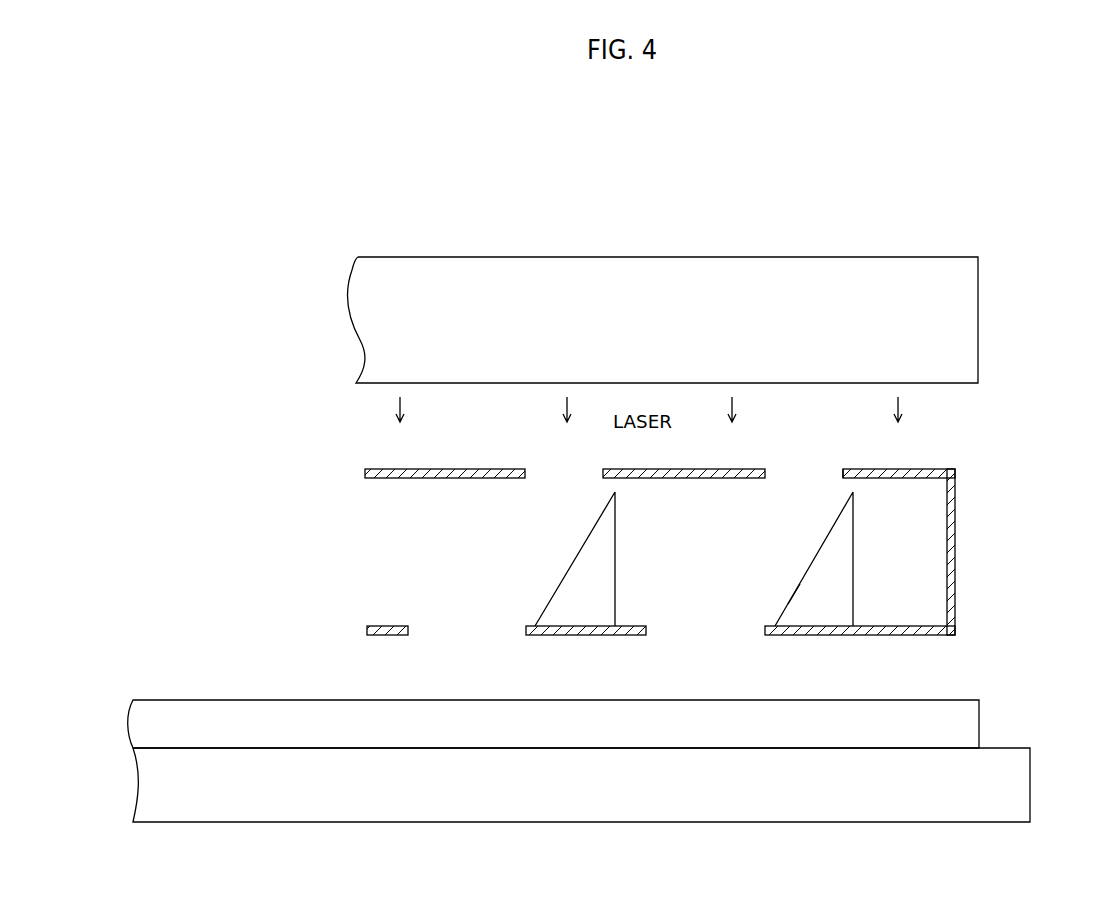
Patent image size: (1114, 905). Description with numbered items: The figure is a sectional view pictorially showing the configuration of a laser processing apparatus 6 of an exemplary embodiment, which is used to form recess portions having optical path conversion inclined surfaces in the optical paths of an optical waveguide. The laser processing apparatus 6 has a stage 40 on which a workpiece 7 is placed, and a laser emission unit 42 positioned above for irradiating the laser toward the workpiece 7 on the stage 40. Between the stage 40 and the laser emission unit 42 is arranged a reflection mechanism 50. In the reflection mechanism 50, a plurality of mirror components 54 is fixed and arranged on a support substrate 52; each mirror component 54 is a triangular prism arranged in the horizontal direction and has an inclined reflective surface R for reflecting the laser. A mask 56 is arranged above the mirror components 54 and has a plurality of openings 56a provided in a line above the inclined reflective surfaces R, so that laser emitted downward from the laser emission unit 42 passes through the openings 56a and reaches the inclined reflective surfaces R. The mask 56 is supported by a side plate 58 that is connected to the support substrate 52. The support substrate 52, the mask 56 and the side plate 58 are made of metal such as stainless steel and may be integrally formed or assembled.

The laser processing apparatus 6 is at (667, 187).
The laser emission unit 42 is at (963, 312).
The reflection mechanism 50 is at (925, 535).
The support substrate 52 is at (907, 623).
The mirror component 54 is at (840, 590).
The mask 56 is at (947, 468).
The opening 56a is at (843, 474).
The side plate 58 is at (953, 497).
The inclined reflective surface R is at (788, 600).
The workpiece 7 is at (962, 730).
The stage 40 is at (1017, 785).